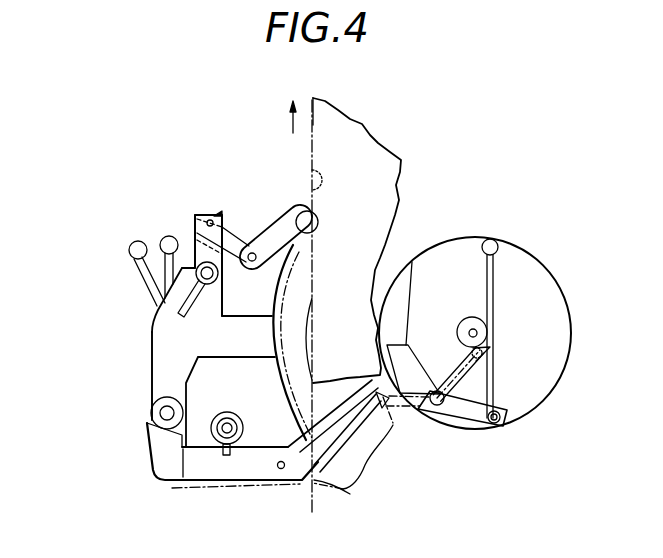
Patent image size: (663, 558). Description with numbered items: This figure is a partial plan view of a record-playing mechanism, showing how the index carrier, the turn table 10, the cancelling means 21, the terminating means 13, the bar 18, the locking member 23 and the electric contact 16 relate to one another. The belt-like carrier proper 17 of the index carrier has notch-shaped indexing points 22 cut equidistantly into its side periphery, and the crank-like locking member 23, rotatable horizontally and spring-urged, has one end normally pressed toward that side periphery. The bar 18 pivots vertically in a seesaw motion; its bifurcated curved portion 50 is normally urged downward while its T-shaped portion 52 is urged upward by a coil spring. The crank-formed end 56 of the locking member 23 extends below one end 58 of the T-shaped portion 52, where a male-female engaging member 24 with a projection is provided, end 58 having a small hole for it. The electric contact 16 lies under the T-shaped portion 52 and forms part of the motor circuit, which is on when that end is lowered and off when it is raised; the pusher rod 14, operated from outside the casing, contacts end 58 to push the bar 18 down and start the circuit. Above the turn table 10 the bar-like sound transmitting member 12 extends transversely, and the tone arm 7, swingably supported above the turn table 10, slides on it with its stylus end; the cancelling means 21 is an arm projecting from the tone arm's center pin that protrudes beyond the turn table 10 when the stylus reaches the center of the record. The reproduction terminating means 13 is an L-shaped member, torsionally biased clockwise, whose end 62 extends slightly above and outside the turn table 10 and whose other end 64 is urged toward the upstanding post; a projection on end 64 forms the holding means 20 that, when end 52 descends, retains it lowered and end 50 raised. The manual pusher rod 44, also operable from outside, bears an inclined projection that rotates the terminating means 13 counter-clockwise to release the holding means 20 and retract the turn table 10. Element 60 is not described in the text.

The tone arm 7 is at (462, 425).
The turn table 10 is at (565, 367).
The sound transmitting member 12 is at (494, 270).
The reproduction terminating means 13 is at (183, 467).
The pusher rod 14 is at (222, 278).
The electric contact 16 is at (148, 283).
The carrier proper 17 is at (342, 504).
The bar 18 is at (212, 337).
The holding means 20 is at (148, 420).
The cancelling means 21 is at (412, 262).
The indexing points 22 is at (313, 178).
The locking member 23 is at (268, 227).
The male-female engaging member 24 is at (216, 214).
The manual pusher rod 44 is at (228, 413).
The bifurcated curved portion 50 is at (298, 392).
The T-shaped portion 52 is at (152, 328).
The end of locking member 56 is at (247, 242).
The end of T-end 58 is at (194, 217).
The side wall 60 is at (150, 377).
The end of L-shaped member 62 is at (350, 436).
The other end of L-shaped member 64 is at (157, 458).